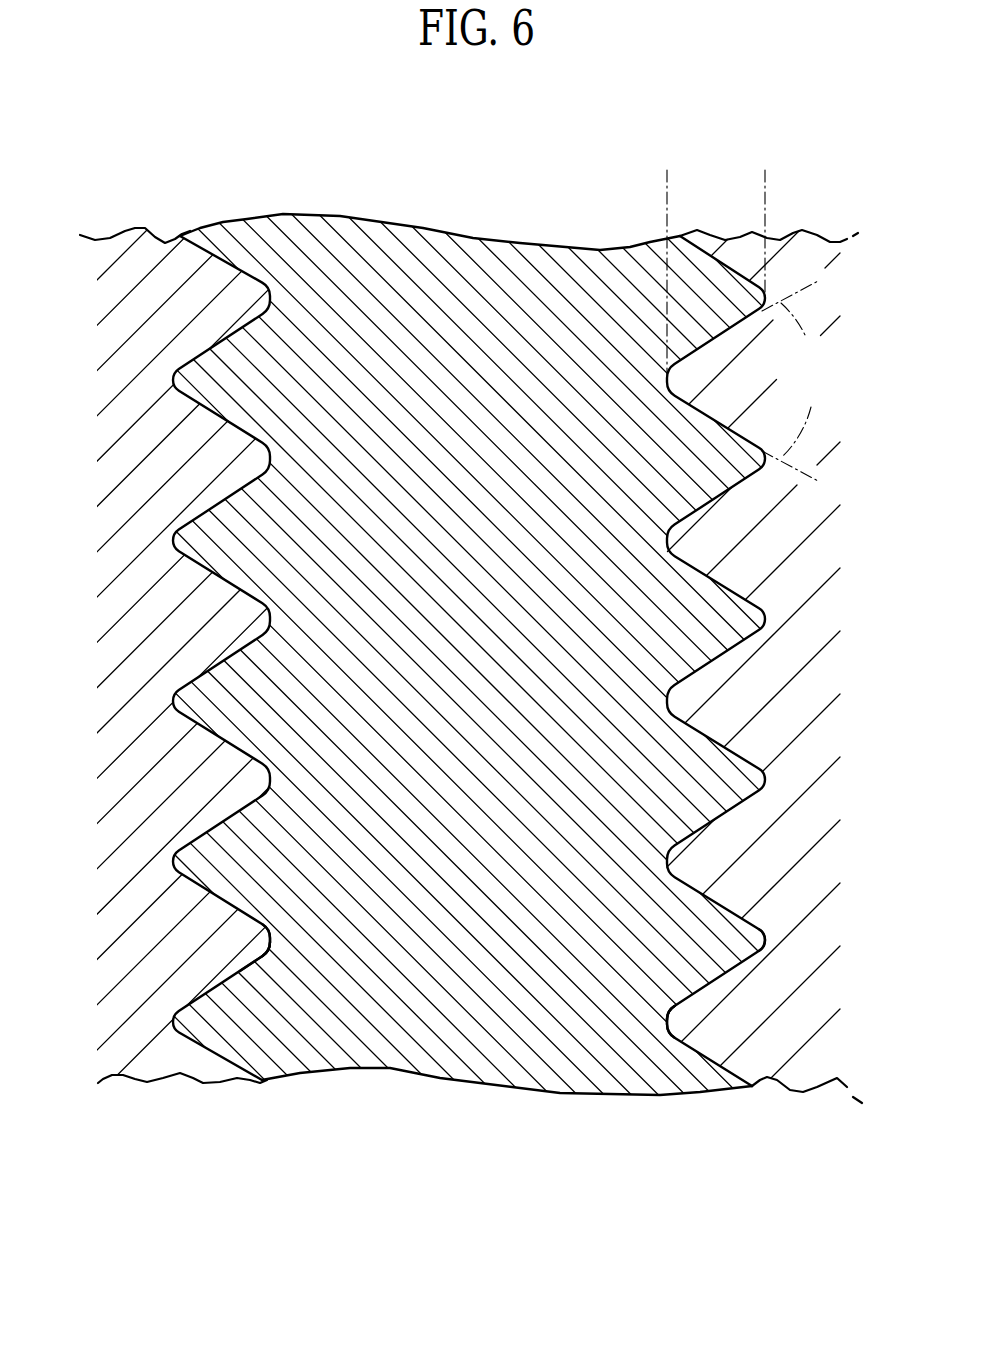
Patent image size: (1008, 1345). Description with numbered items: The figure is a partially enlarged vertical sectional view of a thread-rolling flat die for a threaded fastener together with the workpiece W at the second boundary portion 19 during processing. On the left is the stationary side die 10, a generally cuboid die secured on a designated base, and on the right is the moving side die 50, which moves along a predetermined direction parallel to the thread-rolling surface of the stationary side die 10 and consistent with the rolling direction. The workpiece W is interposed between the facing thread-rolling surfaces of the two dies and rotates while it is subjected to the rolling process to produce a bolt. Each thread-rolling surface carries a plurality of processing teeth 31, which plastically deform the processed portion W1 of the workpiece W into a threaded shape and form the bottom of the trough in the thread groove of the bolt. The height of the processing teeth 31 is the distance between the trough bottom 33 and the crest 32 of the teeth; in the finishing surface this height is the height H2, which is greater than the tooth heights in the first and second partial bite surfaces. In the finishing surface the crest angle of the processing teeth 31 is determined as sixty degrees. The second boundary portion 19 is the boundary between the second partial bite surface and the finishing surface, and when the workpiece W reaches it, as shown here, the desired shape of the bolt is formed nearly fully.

The stationary side die 10 is at (155, 202).
The second boundary portion 19 is at (227, 243).
The workpiece W is at (482, 208).
The moving side die 50 is at (812, 203).
The height of the processing tooth in the finishing surface H2 is at (790, 198).
The processing teeth 31 is at (260, 945).
The crest 32 is at (277, 942).
The trough bottom 33 is at (763, 943).
The processed portion W1 is at (447, 1062).